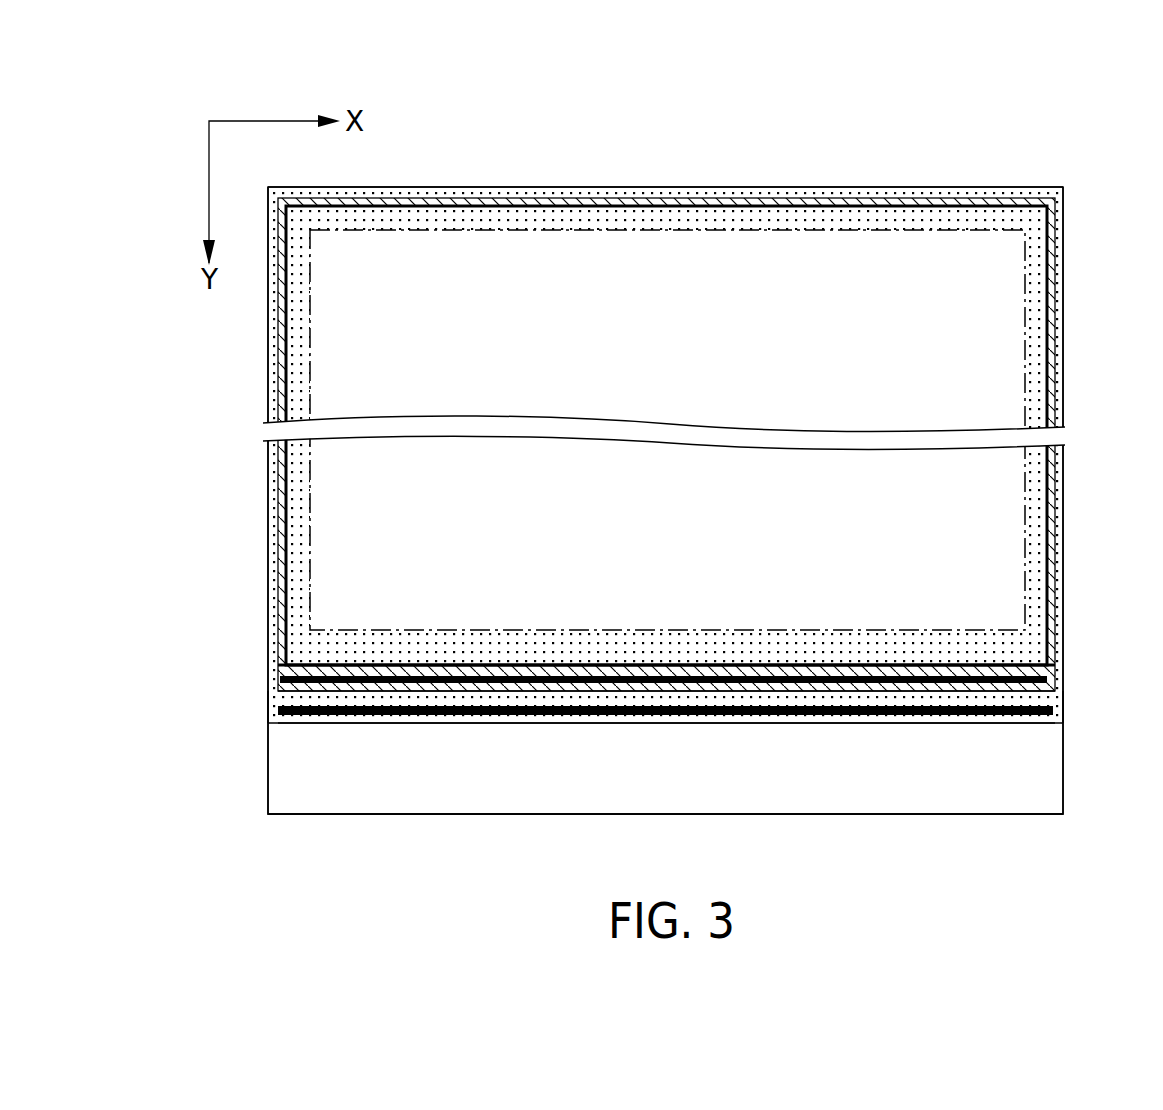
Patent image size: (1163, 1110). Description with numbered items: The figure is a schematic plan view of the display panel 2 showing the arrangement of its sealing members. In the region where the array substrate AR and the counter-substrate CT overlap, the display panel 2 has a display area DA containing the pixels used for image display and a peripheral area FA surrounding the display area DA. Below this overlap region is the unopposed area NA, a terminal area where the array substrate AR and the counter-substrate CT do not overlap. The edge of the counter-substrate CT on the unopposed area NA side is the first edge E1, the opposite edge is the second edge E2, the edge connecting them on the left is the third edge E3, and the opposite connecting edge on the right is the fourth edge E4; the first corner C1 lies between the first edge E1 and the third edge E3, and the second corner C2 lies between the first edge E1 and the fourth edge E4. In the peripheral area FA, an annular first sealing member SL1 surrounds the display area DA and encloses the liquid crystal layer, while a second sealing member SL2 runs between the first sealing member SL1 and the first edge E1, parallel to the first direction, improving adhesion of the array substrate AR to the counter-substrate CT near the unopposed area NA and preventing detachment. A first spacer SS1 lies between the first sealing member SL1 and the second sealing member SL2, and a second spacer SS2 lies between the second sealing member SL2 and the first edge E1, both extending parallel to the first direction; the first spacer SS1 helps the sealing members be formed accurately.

The display panel 2 is at (1044, 166).
The display area DA is at (627, 230).
The peripheral area FA is at (941, 220).
The first edge E1 is at (777, 728).
The second edge E2 is at (780, 178).
The third edge E3 is at (258, 490).
The fourth edge E4 is at (1074, 530).
The counter-substrate CT is at (268, 643).
The first corner C1 is at (254, 741).
The second corner C2 is at (1078, 731).
The array substrate AR is at (270, 806).
The unopposed area NA is at (970, 794).
The first sealing member SL1 is at (378, 676).
The second sealing member SL2 is at (372, 708).
The first spacer SS1 is at (443, 684).
The second spacer SS2 is at (510, 717).